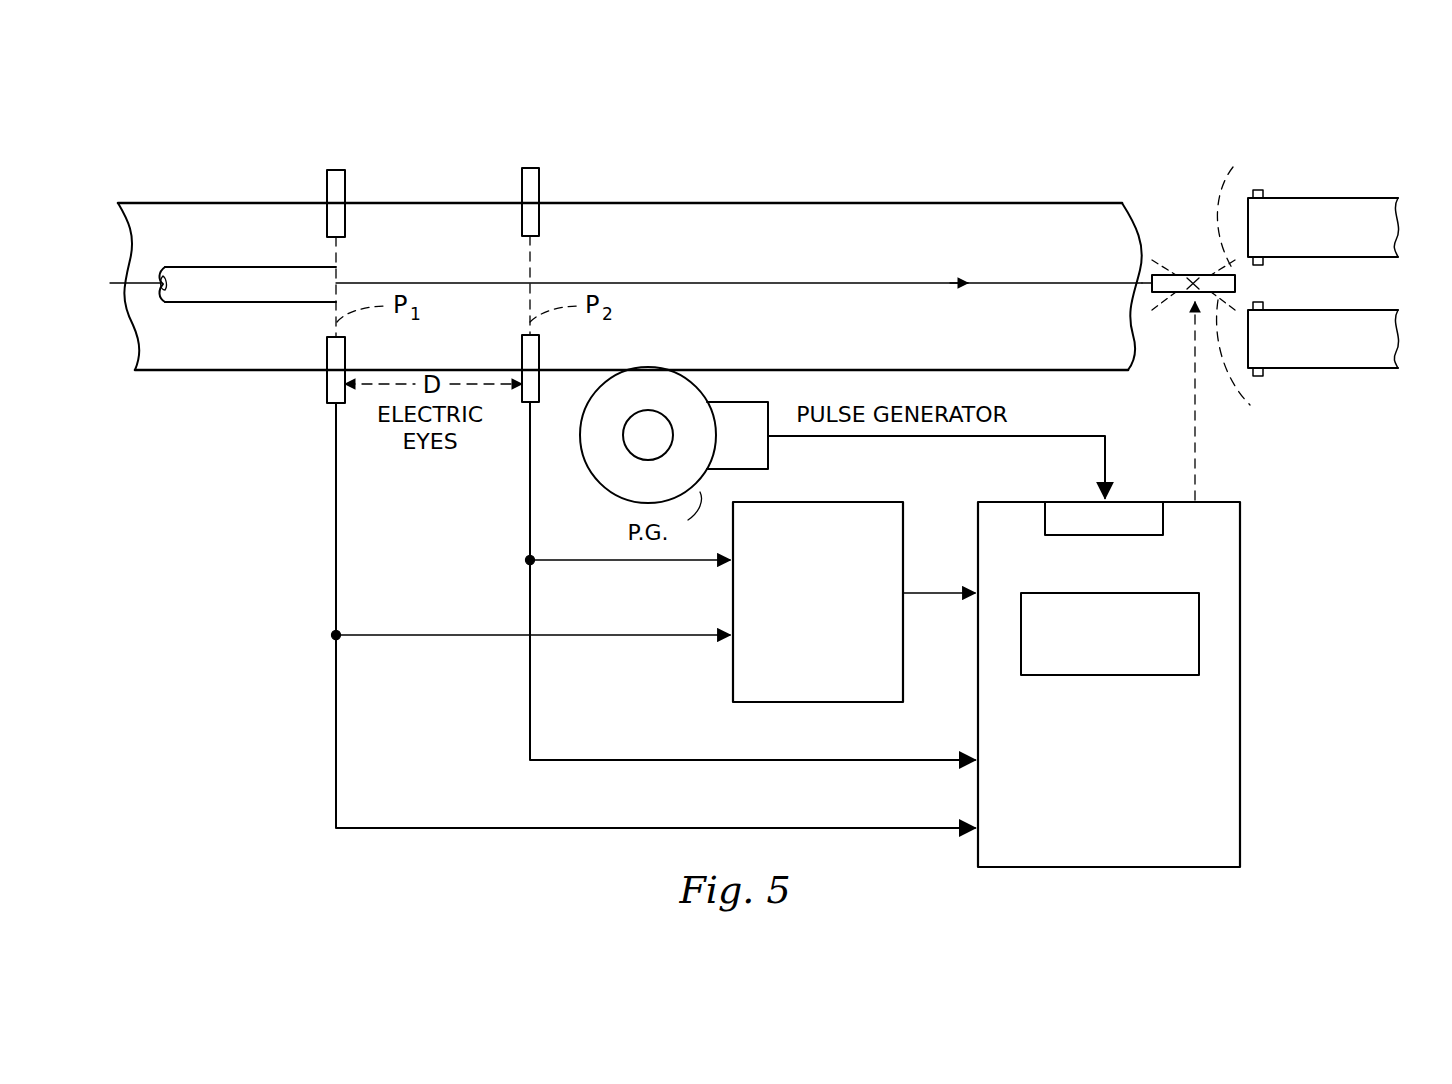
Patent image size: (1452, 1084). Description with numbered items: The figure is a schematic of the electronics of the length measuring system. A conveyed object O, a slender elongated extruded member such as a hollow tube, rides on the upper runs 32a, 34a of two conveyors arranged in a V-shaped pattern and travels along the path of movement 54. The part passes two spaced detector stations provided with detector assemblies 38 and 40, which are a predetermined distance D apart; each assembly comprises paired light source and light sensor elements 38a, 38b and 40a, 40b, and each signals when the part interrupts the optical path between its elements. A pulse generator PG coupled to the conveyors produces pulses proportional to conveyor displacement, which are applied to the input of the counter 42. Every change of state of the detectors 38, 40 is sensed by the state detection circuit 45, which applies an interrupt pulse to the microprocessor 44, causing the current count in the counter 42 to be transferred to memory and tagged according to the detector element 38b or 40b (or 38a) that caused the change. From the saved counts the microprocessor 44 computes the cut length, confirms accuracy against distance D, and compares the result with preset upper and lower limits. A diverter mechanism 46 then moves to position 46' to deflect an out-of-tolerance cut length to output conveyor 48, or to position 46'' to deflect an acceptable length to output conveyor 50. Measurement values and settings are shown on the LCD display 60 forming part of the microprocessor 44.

The upper run of first conveyor 32a is at (215, 220).
The upper run of second conveyor 34a is at (237, 357).
The path of movement 54 is at (884, 274).
The object O is at (175, 312).
The first detector assembly 38 is at (332, 275).
The first detector element 38a is at (327, 188).
The first detector element 38b is at (327, 393).
The second detector assembly 40 is at (537, 260).
The second detector element 40a is at (522, 184).
The second detector element 40b is at (540, 390).
The counter 42 is at (1130, 500).
The microprocessor 44 is at (1109, 662).
The state detection circuit 45 is at (790, 702).
The diverter mechanism 46 is at (1169, 319).
The diverter first position 46' is at (1241, 208).
The diverter second position 46'' is at (1256, 364).
The output conveyor 48 is at (1345, 192).
The output conveyor 50 is at (1316, 376).
The LCD display 60 is at (1093, 675).